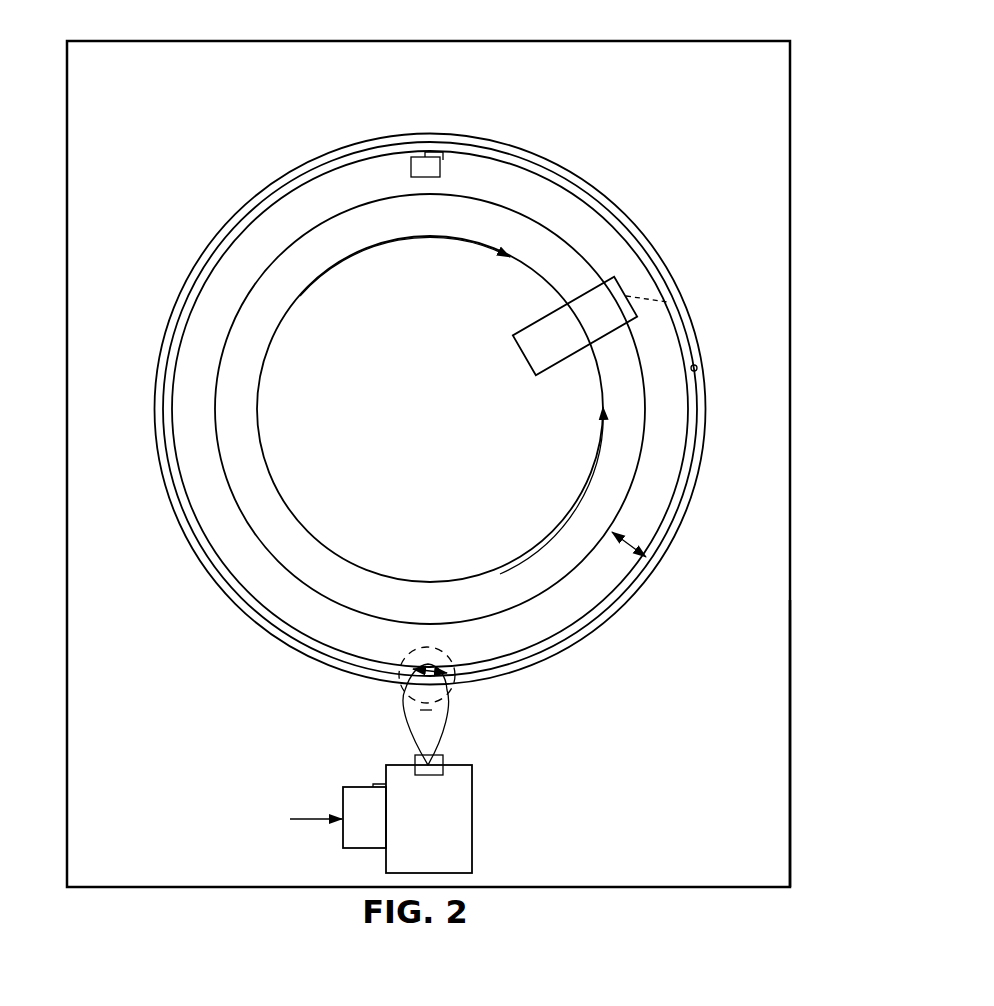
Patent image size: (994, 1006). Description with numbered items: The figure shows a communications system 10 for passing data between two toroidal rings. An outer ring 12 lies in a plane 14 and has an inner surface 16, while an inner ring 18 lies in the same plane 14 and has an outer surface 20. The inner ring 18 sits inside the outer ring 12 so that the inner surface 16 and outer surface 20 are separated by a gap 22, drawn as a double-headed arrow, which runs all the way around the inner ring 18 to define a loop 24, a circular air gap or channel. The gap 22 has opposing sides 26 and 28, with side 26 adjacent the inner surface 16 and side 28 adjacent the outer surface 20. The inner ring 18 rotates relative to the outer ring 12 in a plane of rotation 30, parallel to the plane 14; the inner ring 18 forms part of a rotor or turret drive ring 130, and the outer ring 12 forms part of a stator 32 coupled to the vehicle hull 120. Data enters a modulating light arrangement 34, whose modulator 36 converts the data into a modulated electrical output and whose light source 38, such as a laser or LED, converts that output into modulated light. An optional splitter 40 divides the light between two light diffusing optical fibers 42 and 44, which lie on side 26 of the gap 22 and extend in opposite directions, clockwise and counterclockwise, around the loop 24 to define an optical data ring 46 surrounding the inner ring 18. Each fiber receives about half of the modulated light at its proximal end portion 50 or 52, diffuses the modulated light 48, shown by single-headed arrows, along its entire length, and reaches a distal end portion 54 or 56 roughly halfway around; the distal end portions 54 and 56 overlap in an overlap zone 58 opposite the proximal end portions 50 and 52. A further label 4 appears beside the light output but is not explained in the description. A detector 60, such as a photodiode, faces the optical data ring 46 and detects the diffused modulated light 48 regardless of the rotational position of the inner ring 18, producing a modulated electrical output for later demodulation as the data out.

The communications system 10 is at (811, 35).
The outer ring 12 is at (708, 413).
The plane 14 is at (790, 383).
The inner surface 16 is at (698, 370).
The inner ring 18 is at (243, 488).
The outer surface 20 is at (248, 535).
The gap 22 is at (629, 541).
The loop 24 is at (480, 175).
The side of the gap 26 is at (170, 468).
The side of the gap 28 is at (213, 408).
The plane of rotation 30 is at (279, 320).
The stator 32 is at (655, 578).
The modulating light arrangement 34 is at (353, 857).
The modulator 36 is at (358, 787).
The light source 38 is at (472, 822).
The splitter 40 is at (443, 763).
The laser beam 4 is at (444, 700).
The light diffusing optical fiber 42 is at (310, 643).
The light diffusing optical fiber 44 is at (542, 645).
The optical data ring 46 is at (548, 173).
The modulated light 48 is at (315, 203).
The proximal end portion 50 is at (445, 700).
The proximal end portion 52 is at (408, 695).
The distal end portion 54 is at (423, 160).
The distal end portion 56 is at (425, 160).
The overlap zone 58 is at (425, 178).
The detector 60 is at (598, 346).
The vehicle hull 120 is at (772, 712).
The turret drive ring 130 is at (360, 228).